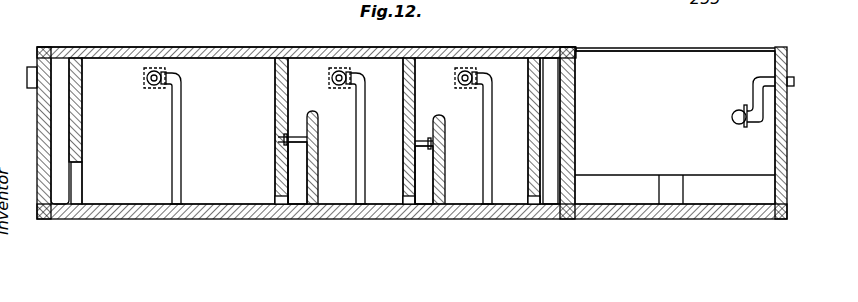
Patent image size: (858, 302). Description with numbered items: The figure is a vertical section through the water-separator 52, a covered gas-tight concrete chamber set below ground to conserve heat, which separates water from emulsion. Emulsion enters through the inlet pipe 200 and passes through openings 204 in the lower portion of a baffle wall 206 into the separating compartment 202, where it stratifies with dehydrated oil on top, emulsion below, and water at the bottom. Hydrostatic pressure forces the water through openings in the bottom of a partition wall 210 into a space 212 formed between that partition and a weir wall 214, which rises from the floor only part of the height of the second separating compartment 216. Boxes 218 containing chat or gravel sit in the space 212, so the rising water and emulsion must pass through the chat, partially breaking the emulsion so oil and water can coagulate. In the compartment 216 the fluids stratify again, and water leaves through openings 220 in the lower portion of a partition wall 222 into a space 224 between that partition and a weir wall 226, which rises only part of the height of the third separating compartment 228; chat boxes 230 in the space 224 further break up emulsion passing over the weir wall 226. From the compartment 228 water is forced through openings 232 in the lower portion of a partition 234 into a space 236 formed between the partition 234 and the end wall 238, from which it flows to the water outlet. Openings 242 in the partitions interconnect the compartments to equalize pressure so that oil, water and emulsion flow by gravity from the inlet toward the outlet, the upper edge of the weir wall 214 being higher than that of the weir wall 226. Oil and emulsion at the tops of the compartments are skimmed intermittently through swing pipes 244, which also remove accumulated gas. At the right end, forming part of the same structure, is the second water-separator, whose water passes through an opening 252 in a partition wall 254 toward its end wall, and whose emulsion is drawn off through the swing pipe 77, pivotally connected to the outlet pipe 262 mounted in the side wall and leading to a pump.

The water-separator 52 is at (145, 47).
The swing pipe 77 is at (762, 108).
The inlet pipe 200 is at (32, 90).
The separating compartment 202 is at (178, 131).
The openings 204 is at (80, 184).
The baffle wall 206 is at (83, 126).
The partition wall 210 is at (288, 86).
The space 212 is at (297, 177).
The weir wall 214 is at (319, 123).
The second separating compartment 216 is at (381, 72).
The boxes 218 is at (306, 143).
The openings 220 is at (407, 204).
The partition wall 222 is at (416, 86).
The space 224 is at (421, 180).
The weir wall 226 is at (445, 140).
The third separating compartment 228 is at (541, 49).
The chat boxes 230 is at (420, 140).
The openings 232 is at (537, 204).
The partition 234 is at (575, 71).
The space 236 is at (551, 164).
The end wall 238 is at (573, 98).
The openings 242 is at (97, 49).
The swing pipes 244 is at (181, 152).
The opening 252 is at (672, 193).
The partition wall 254 is at (629, 192).
The outlet pipe 262 is at (786, 76).